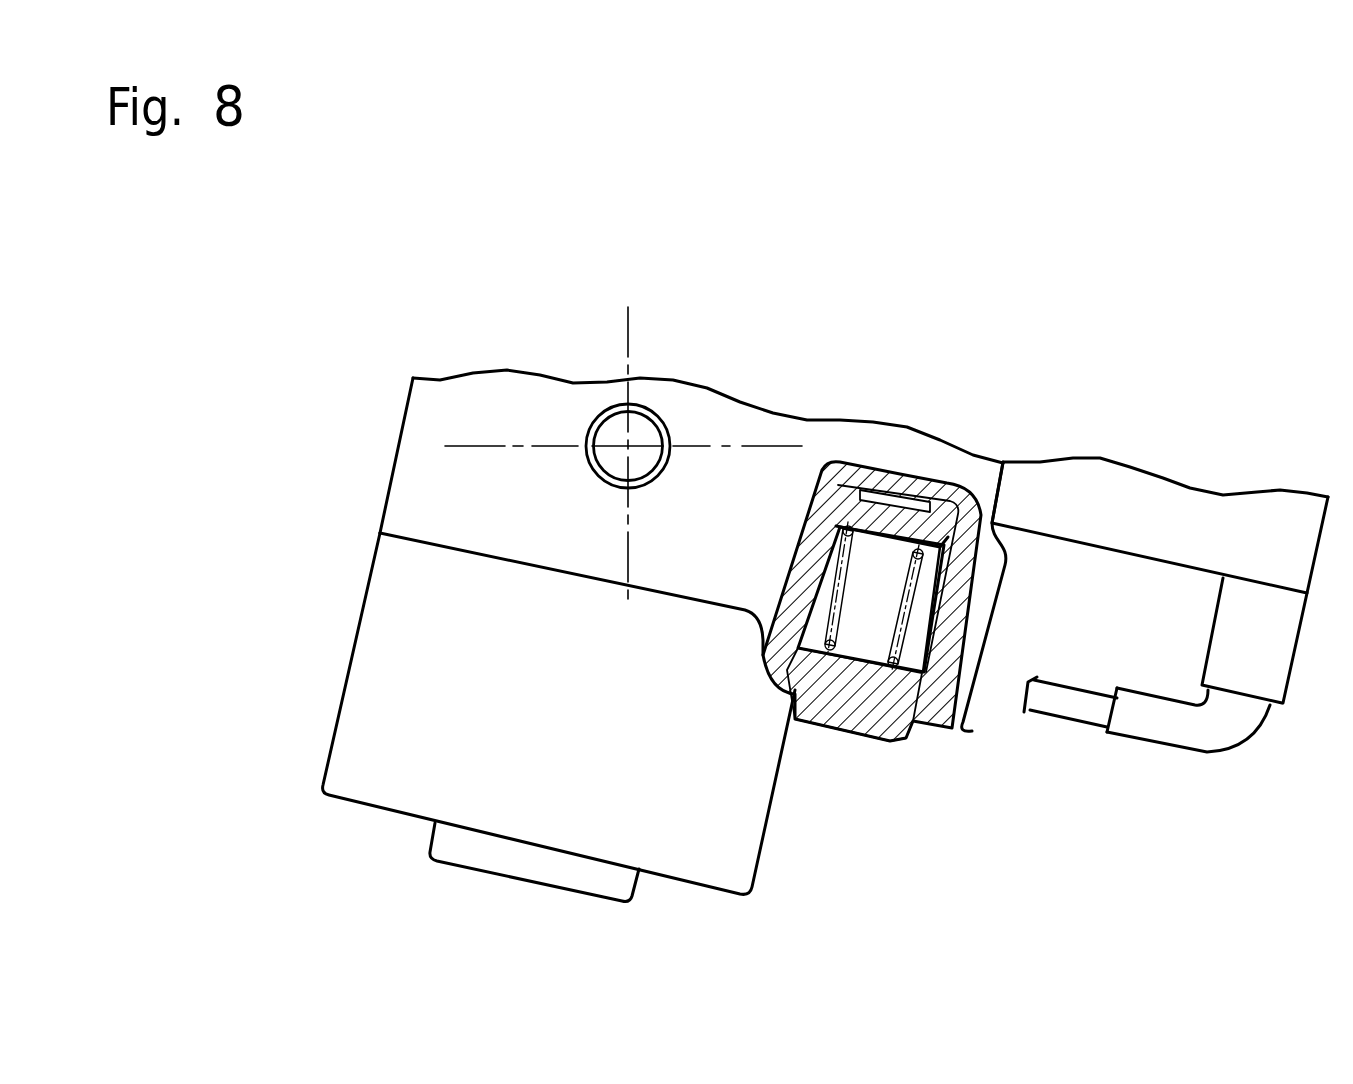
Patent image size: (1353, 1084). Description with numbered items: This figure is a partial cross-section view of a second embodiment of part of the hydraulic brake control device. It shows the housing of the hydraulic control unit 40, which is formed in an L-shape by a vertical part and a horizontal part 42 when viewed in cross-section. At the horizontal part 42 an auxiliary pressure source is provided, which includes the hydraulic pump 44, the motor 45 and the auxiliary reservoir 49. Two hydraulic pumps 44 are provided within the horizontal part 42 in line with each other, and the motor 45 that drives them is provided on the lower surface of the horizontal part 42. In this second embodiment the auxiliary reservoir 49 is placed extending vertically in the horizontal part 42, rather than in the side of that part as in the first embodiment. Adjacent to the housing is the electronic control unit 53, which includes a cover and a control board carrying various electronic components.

The hydraulic control unit 40 is at (770, 408).
The horizontal part 42 is at (487, 397).
The hydraulic pump 44 is at (642, 453).
The motor 45 is at (750, 863).
The auxiliary reservoir 49 is at (903, 720).
The electronic control unit 53 is at (1278, 490).